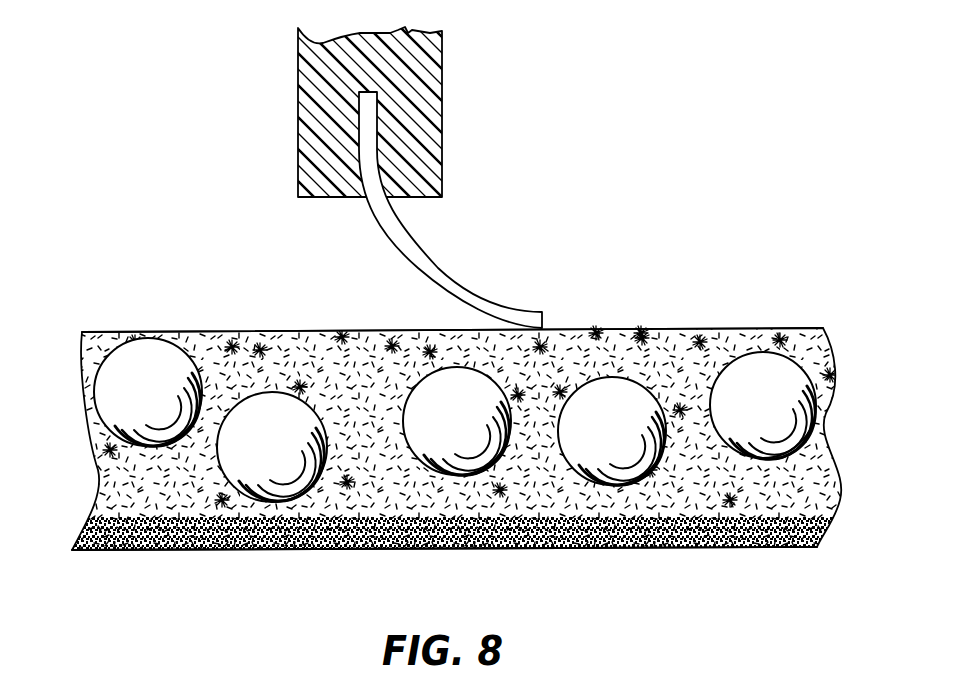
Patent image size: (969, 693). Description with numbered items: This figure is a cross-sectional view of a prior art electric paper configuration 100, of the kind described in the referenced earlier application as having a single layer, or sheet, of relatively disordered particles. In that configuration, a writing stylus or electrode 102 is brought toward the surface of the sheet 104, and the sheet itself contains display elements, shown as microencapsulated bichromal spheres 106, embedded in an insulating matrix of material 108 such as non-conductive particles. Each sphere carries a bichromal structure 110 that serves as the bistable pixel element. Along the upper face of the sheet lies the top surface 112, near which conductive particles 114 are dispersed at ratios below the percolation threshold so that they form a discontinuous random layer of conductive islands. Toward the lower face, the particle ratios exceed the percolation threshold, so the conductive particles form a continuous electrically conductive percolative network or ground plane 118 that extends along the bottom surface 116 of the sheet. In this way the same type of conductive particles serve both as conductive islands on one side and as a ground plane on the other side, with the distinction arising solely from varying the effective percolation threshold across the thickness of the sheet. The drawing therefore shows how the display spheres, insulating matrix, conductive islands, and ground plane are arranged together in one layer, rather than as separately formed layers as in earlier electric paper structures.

The sensor assembly 100 is at (448, 298).
The optical fiber 102 is at (418, 268).
The substrate 104 is at (448, 433).
The microspheres 106 is at (426, 420).
The matrix material 108 is at (118, 497).
The microsphere coating 110 is at (105, 441).
The top surface 112 is at (766, 326).
The surface features 114 is at (598, 320).
The bottom surface 116 is at (729, 551).
The dense base layer 118 is at (82, 541).